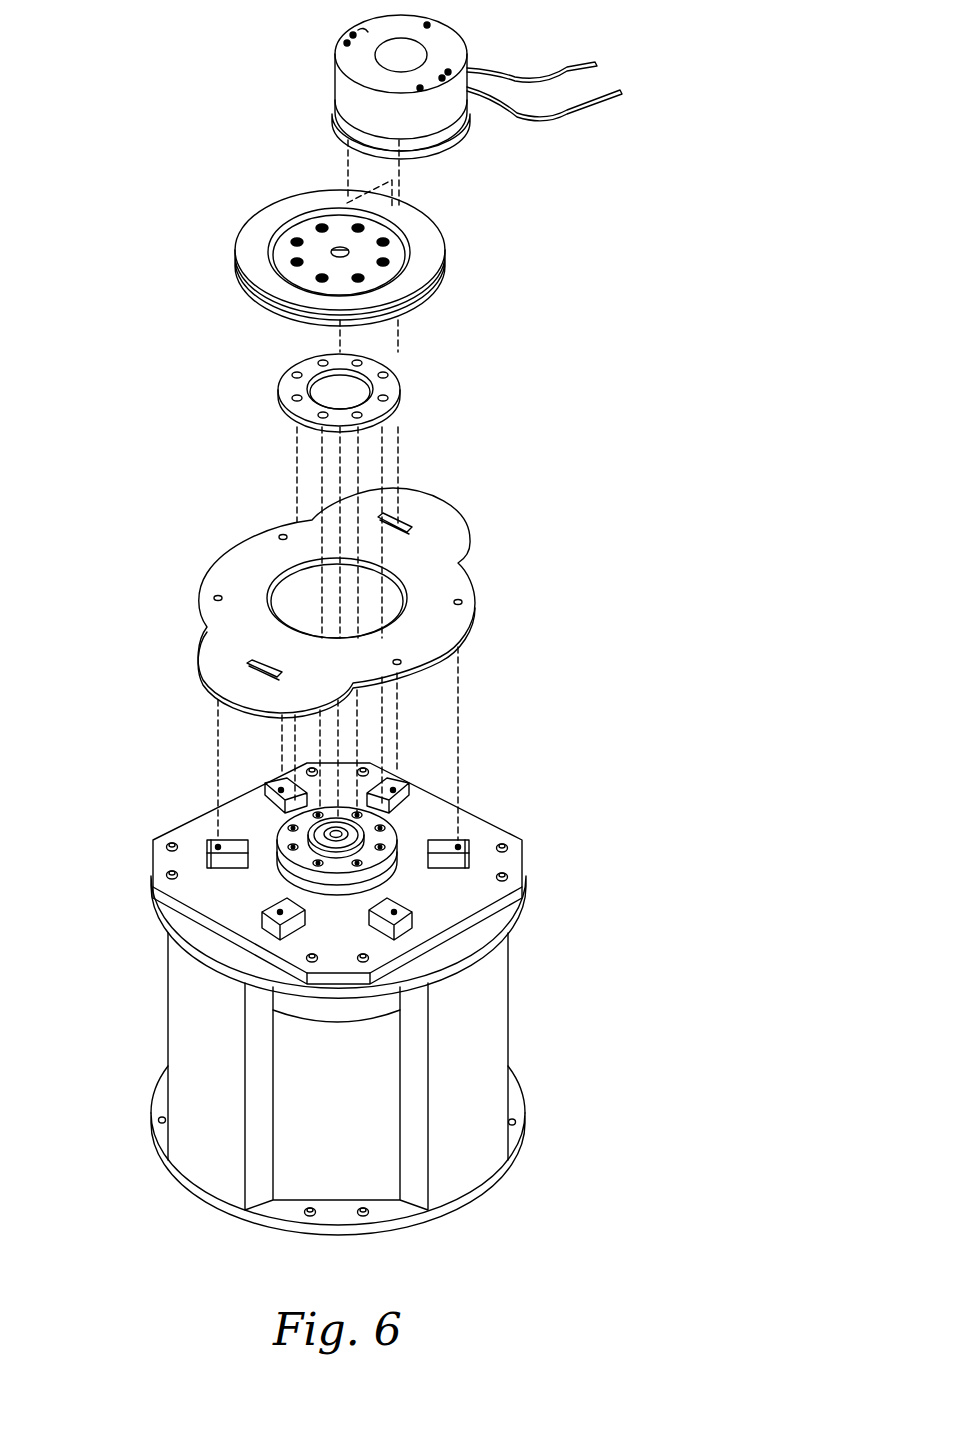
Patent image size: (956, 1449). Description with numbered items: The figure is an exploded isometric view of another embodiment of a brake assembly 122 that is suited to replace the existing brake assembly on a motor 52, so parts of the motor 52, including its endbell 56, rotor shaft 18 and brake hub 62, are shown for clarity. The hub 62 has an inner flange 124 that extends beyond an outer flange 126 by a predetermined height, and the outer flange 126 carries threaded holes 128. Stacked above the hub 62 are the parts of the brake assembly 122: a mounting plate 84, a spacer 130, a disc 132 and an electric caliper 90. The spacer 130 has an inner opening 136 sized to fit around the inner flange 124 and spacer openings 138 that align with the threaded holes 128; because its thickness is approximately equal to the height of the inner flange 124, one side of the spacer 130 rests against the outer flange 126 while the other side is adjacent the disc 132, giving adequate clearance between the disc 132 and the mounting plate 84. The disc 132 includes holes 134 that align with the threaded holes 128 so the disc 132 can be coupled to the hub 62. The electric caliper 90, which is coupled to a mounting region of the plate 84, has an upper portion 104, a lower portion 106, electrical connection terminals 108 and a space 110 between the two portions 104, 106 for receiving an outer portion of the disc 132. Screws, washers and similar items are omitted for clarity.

The rotor shaft 18 is at (323, 830).
The motor 52 is at (124, 1078).
The endbell 56 is at (520, 863).
The brake hub 62 is at (418, 822).
The mounting plate 84 is at (470, 520).
The electric caliper 90 is at (350, 13).
The upper portion 104 is at (460, 32).
The lower portion 106 is at (333, 123).
The electrical connection terminals 108 is at (603, 92).
The space 110 is at (470, 138).
The brake assembly 122 is at (158, 356).
The inner flange 124 is at (377, 843).
The outer flange 126 is at (337, 867).
The threaded holes 128 is at (320, 863).
The spacer 130 is at (418, 388).
The disc 132 is at (452, 210).
The holes 134 is at (388, 260).
The inner opening 136 is at (323, 392).
The spacer openings 138 is at (361, 362).